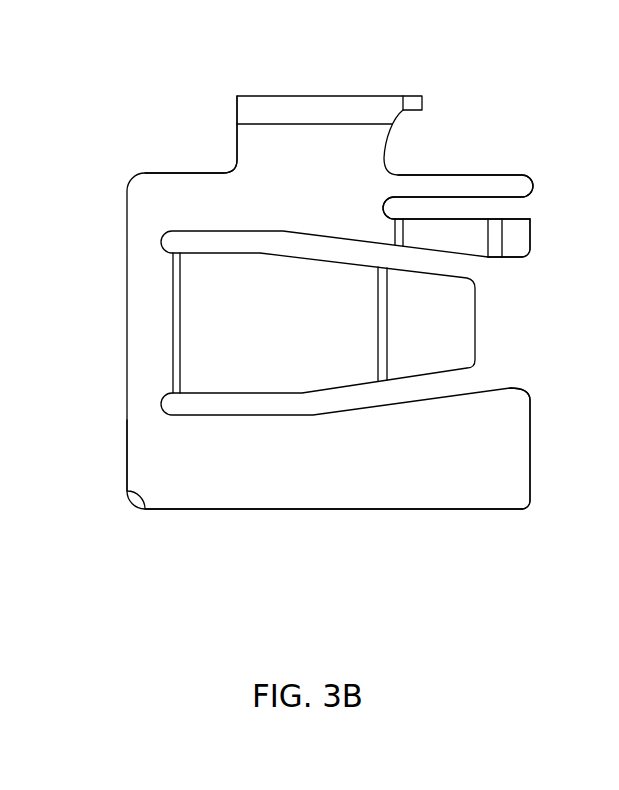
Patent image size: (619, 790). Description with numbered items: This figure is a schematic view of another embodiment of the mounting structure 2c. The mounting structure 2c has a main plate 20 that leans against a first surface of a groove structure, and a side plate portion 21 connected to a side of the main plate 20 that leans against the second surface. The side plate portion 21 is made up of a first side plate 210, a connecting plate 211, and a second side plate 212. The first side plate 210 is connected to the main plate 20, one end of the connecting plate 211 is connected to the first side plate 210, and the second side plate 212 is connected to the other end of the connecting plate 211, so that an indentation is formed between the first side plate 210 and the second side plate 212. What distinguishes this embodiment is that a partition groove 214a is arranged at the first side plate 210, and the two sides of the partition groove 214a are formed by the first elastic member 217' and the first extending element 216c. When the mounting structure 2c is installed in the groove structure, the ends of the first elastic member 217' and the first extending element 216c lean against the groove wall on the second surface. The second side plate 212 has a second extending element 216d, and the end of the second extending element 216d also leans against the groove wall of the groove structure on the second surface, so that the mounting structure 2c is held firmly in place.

The mounting structure 2c is at (124, 172).
The main plate 20 is at (290, 112).
The side plate portion 21 is at (124, 513).
The first side plate 210 is at (238, 193).
The connecting plate 211 is at (130, 322).
The second side plate 212 is at (270, 482).
The partition groove 214a is at (421, 210).
The first extending element 216c is at (508, 175).
The second extending element 216d is at (425, 448).
The first elastic member 217' is at (533, 283).